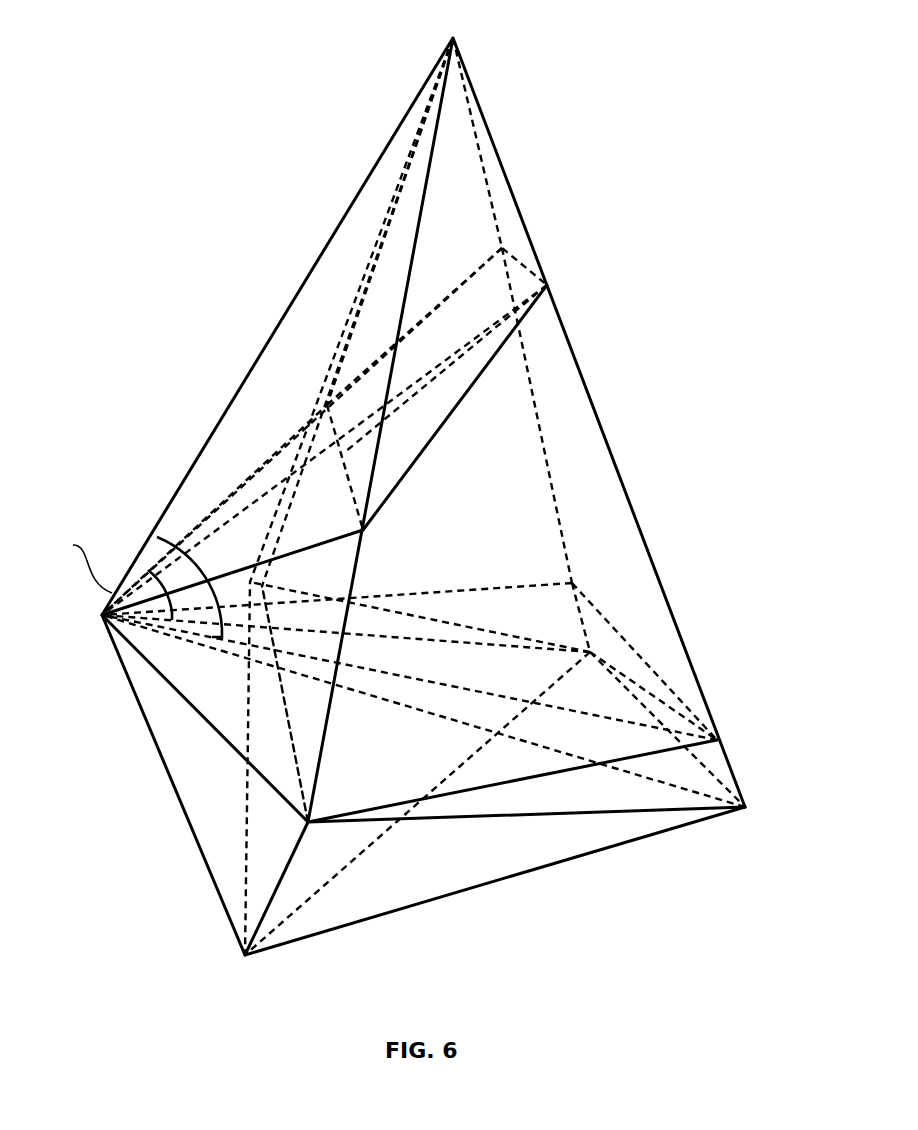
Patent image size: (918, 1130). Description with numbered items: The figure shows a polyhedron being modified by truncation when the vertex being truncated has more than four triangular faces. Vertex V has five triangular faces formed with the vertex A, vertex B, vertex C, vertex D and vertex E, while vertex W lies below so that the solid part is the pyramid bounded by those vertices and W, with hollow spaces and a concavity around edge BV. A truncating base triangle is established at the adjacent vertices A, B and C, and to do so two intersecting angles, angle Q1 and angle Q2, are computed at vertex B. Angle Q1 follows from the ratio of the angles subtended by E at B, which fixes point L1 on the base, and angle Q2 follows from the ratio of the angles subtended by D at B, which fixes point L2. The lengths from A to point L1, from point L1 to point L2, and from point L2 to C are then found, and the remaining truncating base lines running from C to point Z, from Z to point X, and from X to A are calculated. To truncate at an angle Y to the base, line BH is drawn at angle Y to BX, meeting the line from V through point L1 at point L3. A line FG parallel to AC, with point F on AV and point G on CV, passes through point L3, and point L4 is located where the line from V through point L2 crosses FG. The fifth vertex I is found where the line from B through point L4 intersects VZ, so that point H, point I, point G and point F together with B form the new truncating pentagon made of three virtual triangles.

The apex vertex V is at (423, 417).
The point H is at (337, 326).
The point I is at (335, 439).
The point F is at (277, 326).
The line L3 is at (446, 368).
The line L4 is at (414, 359).
The angle Q2 is at (175, 530).
The angle Q1 is at (155, 565).
The line Y is at (77, 563).
The angle A is at (223, 564).
The vertex B is at (217, 742).
The point G is at (455, 421).
The point X is at (409, 649).
The point E is at (423, 768).
The point Z is at (425, 684).
The vertex D is at (438, 723).
The vertex C is at (503, 718).
The vertex W is at (479, 901).
The line L1 is at (268, 614).
The line L2 is at (273, 655).